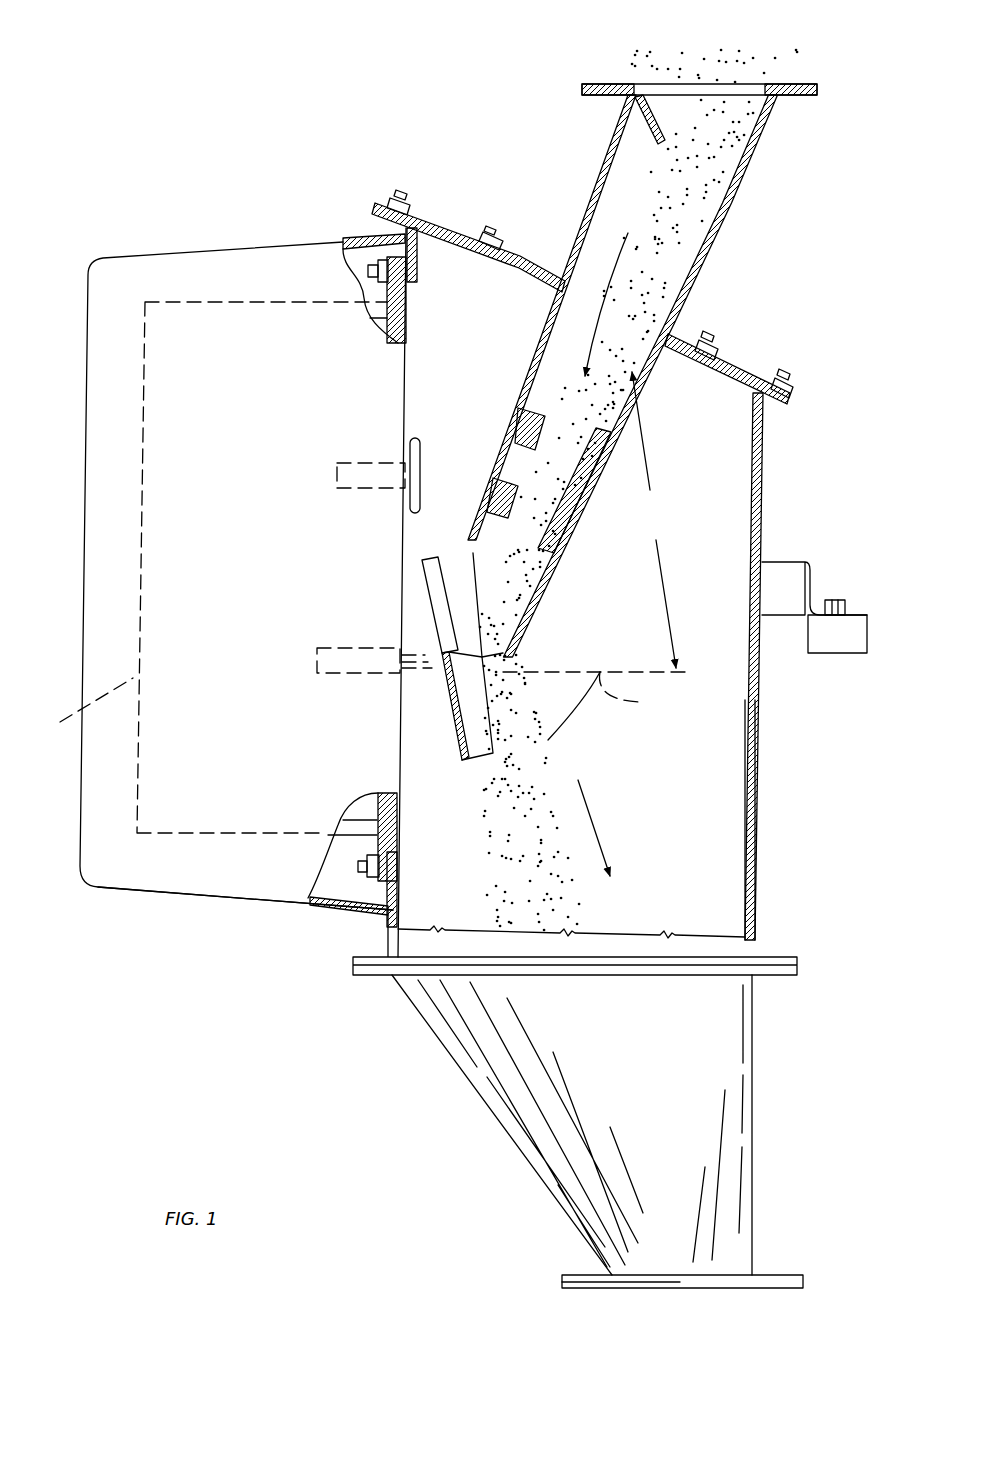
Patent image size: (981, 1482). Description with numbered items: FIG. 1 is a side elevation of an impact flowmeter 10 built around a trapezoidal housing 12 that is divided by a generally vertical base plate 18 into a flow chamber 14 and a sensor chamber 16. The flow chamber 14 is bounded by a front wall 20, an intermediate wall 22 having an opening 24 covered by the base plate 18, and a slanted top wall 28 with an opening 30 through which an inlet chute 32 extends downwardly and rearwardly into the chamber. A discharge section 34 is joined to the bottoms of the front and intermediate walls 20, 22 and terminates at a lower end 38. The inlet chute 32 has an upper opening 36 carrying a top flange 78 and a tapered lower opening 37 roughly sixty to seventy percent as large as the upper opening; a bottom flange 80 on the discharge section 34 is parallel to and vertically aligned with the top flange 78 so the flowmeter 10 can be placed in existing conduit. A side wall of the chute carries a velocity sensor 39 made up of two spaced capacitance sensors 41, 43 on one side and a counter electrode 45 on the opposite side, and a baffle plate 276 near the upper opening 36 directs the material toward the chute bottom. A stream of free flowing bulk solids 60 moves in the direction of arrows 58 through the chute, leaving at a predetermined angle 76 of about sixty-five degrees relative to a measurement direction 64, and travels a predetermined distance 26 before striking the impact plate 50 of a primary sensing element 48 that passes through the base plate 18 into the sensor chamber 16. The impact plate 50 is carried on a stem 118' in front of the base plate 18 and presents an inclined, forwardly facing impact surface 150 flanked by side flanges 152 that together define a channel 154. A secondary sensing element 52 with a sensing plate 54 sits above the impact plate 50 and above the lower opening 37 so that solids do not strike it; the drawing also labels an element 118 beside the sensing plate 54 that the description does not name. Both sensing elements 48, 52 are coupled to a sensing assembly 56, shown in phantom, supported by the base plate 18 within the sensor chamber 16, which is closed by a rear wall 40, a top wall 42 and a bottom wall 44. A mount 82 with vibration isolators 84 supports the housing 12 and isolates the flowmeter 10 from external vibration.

The impact flowmeter 10 is at (323, 158).
The trapezoidal housing 12 is at (778, 476).
The flow chamber 14 is at (690, 708).
The sensor chamber 16 is at (148, 868).
The base plate 18 is at (400, 300).
The front wall 20 is at (762, 800).
The intermediate wall 22 is at (410, 262).
The opening 24 is at (402, 855).
The predetermined distance 26 is at (481, 652).
The slanted top wall 28 is at (735, 357).
The opening 30 is at (573, 288).
The inlet chute 32 is at (766, 205).
The discharge section 34 is at (712, 1063).
The upper opening 36 is at (721, 82).
The lower opening 37 is at (474, 562).
The lower end 38 is at (752, 1290).
The velocity sensor 39 is at (521, 404).
The rear wall 40 is at (82, 572).
The capacitance sensor 41 is at (512, 428).
The top wall 42 is at (160, 245).
The capacitance sensor 43 is at (490, 482).
The bottom wall 44 is at (218, 905).
The counter electrode 45 is at (598, 465).
The primary sensing element 48 is at (430, 688).
The impact plate 50 is at (466, 762).
The secondary sensing element 52 is at (386, 446).
The sensing plate 54 is at (418, 440).
The sensing assembly 56 is at (81, 713).
The arrows 58 is at (622, 270).
The stream of free flowing bulk solids 60 is at (705, 116).
The measurement direction 64 is at (636, 692).
The predetermined angle 76 is at (654, 520).
The top flange 78 is at (805, 92).
The bottom flange 80 is at (583, 1288).
The mount 82 is at (858, 584).
The vibration isolators 84 is at (848, 662).
The upper actuator 118 is at (355, 502).
The stem 118' is at (374, 639).
The impact surface 150 is at (468, 718).
The side flanges 152 is at (432, 586).
The channel 154 is at (478, 733).
The baffle plate 276 is at (648, 138).